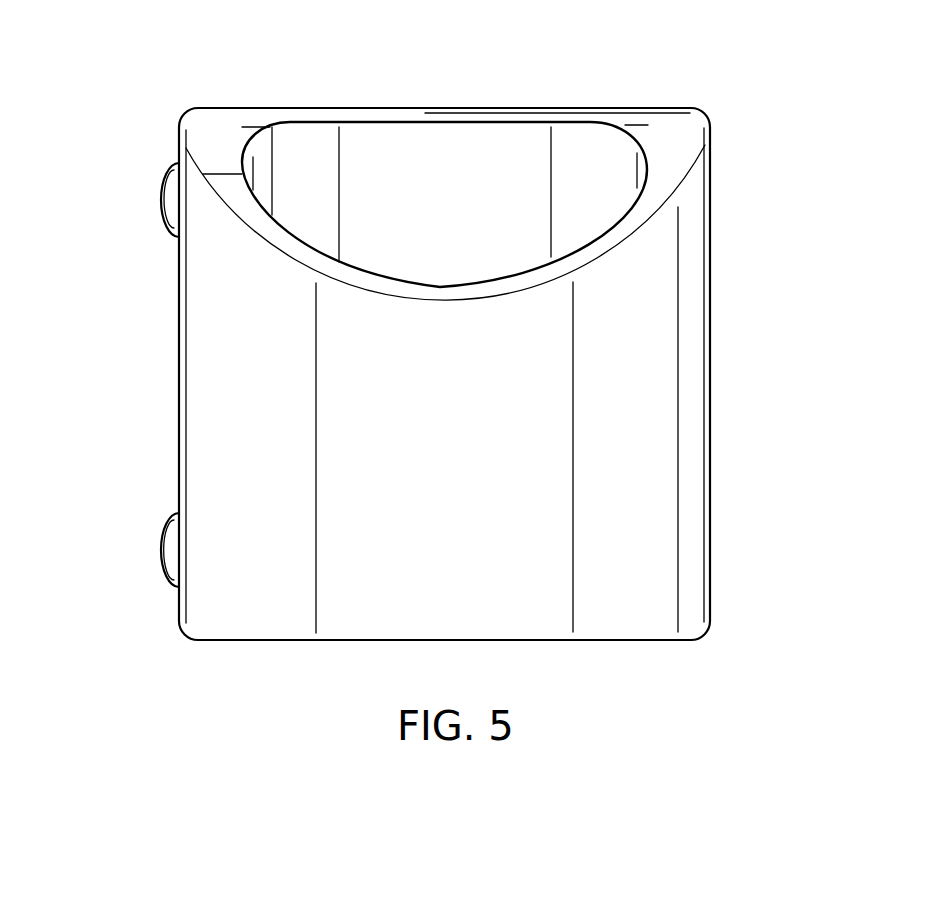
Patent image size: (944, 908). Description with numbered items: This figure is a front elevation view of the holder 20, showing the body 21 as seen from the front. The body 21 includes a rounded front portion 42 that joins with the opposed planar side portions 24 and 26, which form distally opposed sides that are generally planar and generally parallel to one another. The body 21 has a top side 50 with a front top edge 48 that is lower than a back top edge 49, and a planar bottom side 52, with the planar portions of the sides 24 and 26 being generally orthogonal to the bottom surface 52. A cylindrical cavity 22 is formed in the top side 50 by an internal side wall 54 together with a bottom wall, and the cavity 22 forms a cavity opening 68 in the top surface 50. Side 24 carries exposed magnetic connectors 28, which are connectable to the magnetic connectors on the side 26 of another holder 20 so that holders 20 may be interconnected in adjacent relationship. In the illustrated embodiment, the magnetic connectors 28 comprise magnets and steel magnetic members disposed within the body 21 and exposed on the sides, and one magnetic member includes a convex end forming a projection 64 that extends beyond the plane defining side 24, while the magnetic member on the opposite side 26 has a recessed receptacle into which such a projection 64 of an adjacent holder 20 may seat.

The holder 20 is at (176, 697).
The body 21 is at (232, 104).
The cavity 22 is at (390, 162).
The side 24 is at (178, 318).
The side 26 is at (710, 338).
The magnetic connector 28 is at (158, 193).
The front portion 42 is at (455, 467).
The front top edge 48 is at (408, 293).
The back top edge 49 is at (515, 117).
The top side 50 is at (665, 130).
The bottom side 52 is at (553, 640).
The internal side wall 54 is at (588, 207).
The projection 64 is at (165, 205).
The cavity opening 68 is at (513, 275).